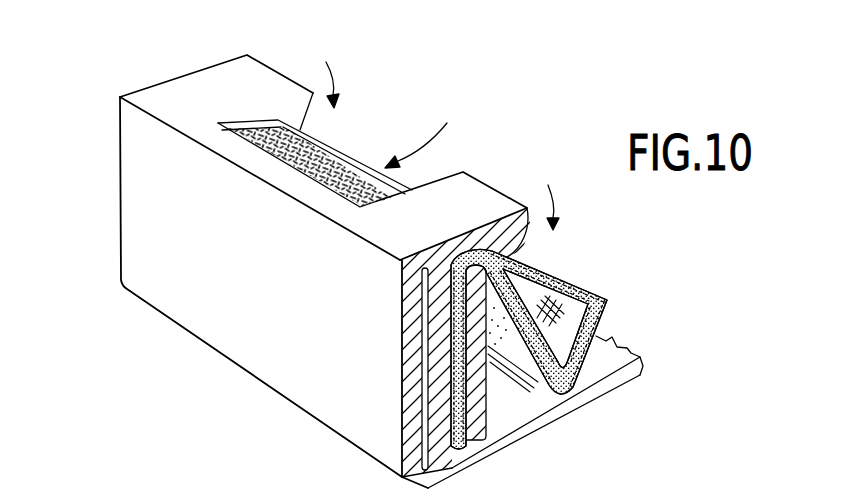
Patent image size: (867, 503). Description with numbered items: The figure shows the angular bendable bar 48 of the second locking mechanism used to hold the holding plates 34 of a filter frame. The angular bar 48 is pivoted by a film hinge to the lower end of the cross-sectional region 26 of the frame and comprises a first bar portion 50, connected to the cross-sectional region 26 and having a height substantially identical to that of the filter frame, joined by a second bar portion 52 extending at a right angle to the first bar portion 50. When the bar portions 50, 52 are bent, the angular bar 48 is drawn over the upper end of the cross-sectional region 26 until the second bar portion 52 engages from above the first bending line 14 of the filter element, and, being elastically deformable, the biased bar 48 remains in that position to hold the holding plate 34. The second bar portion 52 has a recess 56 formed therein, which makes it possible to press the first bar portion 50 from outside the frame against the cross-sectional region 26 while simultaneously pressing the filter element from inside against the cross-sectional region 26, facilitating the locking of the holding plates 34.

The bending line 14 is at (476, 246).
The cross-sectional region of the frame 26 is at (433, 403).
The holding plate 34 is at (490, 390).
The angular bendable bar 48 is at (150, 349).
The first bar portion 50 is at (300, 353).
The second bar portion 52 is at (255, 75).
The recess 56 is at (340, 149).